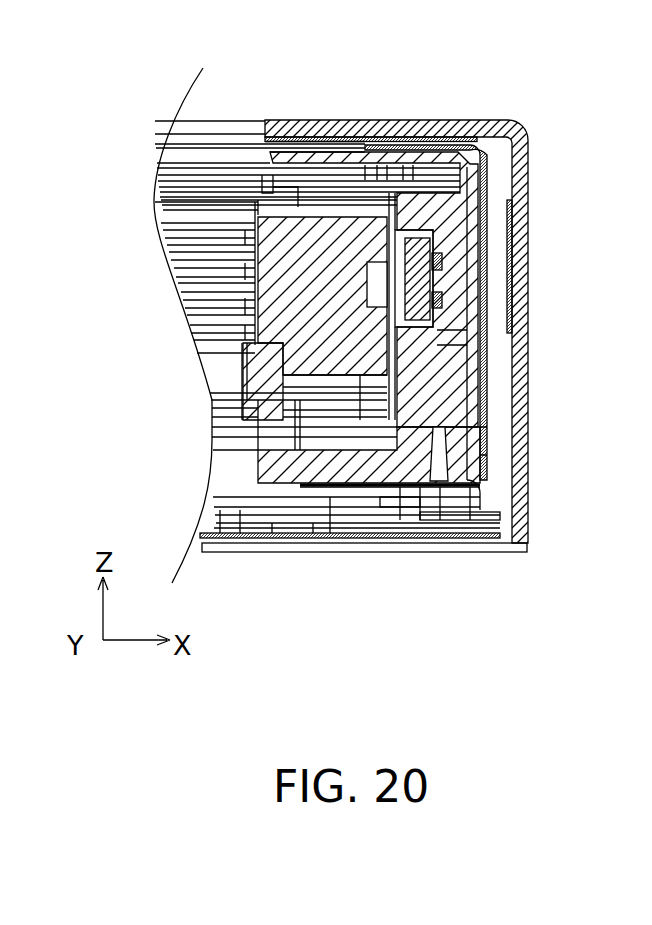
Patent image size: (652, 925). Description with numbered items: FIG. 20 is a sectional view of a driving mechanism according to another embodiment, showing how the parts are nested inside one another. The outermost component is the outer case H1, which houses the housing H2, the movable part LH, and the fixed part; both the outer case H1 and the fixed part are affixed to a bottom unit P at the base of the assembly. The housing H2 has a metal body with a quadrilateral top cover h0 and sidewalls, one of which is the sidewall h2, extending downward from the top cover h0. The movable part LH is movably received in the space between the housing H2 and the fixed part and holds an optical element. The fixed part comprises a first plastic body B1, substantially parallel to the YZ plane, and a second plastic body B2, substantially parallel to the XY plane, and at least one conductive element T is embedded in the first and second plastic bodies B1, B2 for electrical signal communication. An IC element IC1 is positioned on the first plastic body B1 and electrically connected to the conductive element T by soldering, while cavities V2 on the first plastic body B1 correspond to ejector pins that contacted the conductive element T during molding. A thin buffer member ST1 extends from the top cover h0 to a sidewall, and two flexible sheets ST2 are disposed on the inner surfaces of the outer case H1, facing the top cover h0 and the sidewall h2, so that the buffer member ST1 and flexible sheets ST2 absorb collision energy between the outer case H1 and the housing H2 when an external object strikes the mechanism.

The top cover h0 is at (297, 148).
The flexible sheet ST2 is at (373, 141).
The outer case H1 is at (520, 160).
The thin buffer member ST1 is at (450, 257).
The cavity V2 is at (450, 300).
The conductive element T is at (450, 345).
The housing H2 is at (487, 366).
The first plastic body B1 is at (440, 410).
The sidewall h2 is at (483, 441).
The movable part LH is at (177, 212).
The IC element IC1 is at (420, 278).
The second plastic body B2 is at (375, 470).
The bottom unit P is at (332, 560).